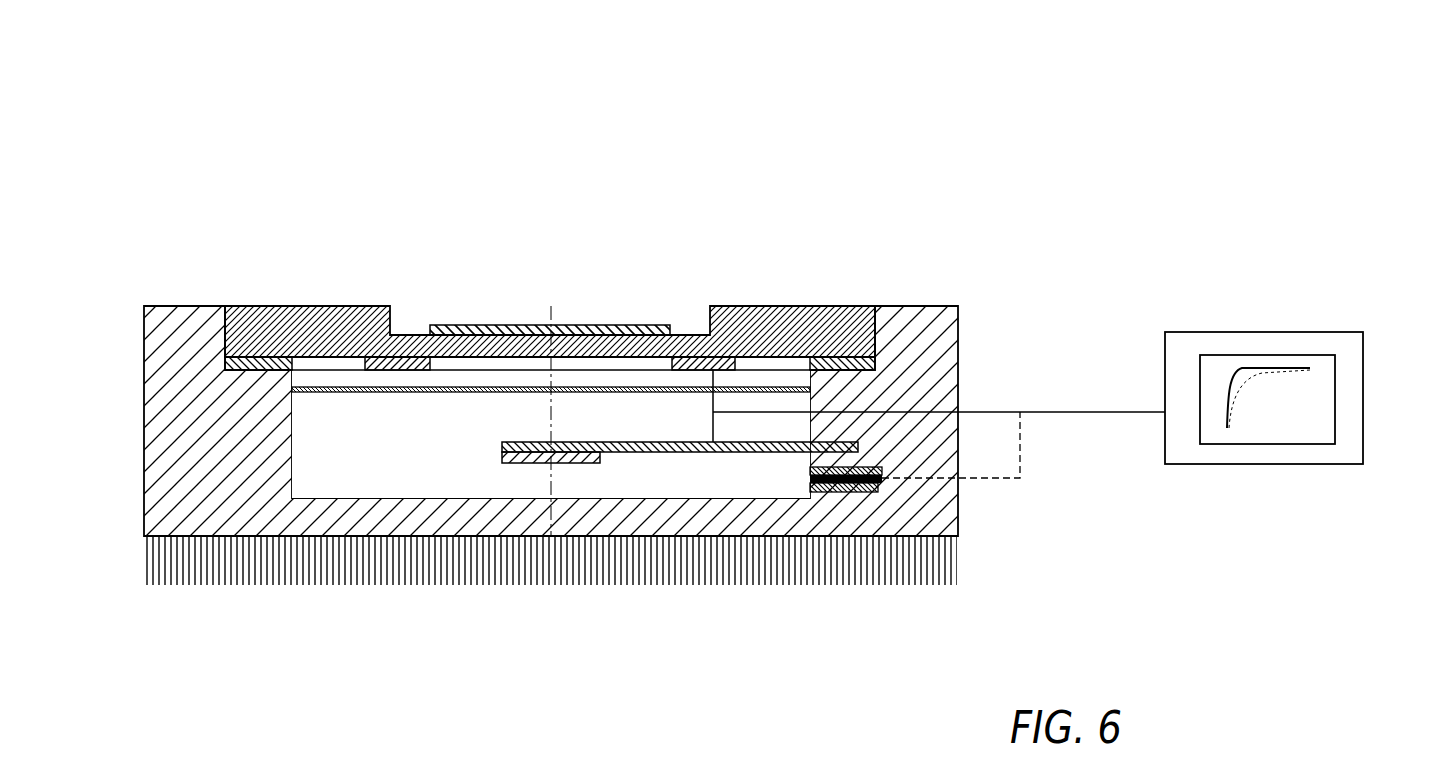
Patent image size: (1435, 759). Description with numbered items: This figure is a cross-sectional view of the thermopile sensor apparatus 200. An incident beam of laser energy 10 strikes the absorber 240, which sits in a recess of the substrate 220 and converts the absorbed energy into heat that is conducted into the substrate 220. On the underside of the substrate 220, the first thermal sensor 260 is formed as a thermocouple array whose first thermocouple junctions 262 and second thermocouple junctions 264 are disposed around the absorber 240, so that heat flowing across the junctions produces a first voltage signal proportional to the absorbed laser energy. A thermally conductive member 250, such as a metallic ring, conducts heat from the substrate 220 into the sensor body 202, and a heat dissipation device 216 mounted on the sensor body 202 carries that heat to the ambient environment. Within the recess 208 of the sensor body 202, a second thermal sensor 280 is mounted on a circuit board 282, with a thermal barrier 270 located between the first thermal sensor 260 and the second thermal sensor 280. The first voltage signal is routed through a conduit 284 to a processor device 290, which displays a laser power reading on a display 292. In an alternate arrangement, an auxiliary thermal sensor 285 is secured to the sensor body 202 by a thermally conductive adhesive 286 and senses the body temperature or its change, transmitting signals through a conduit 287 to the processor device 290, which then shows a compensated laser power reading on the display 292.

The incident beam of laser energy 10 is at (551, 310).
The thermopile sensor apparatus 200 is at (611, 333).
The sensor body 202 is at (143, 432).
The recess 208 is at (364, 484).
The heat dissipation device 216 is at (140, 558).
The substrate 220 is at (287, 306).
The absorber 240 is at (497, 325).
The thermally conductive member 250 is at (262, 357).
The first thermal sensor 260 is at (715, 357).
The first thermocouple junctions 262 is at (680, 357).
The second thermocouple junctions 264 is at (728, 357).
The thermal barrier 270 is at (370, 392).
The second thermal sensor 280 is at (502, 457).
The circuit board 282 is at (510, 443).
The conduit 284 is at (708, 398).
The auxiliary thermal sensor 285 is at (838, 483).
The thermally conductive adhesive 286 is at (882, 488).
The conduit 287 is at (1020, 443).
The processor device 290 is at (1265, 332).
The display 292 is at (1335, 398).